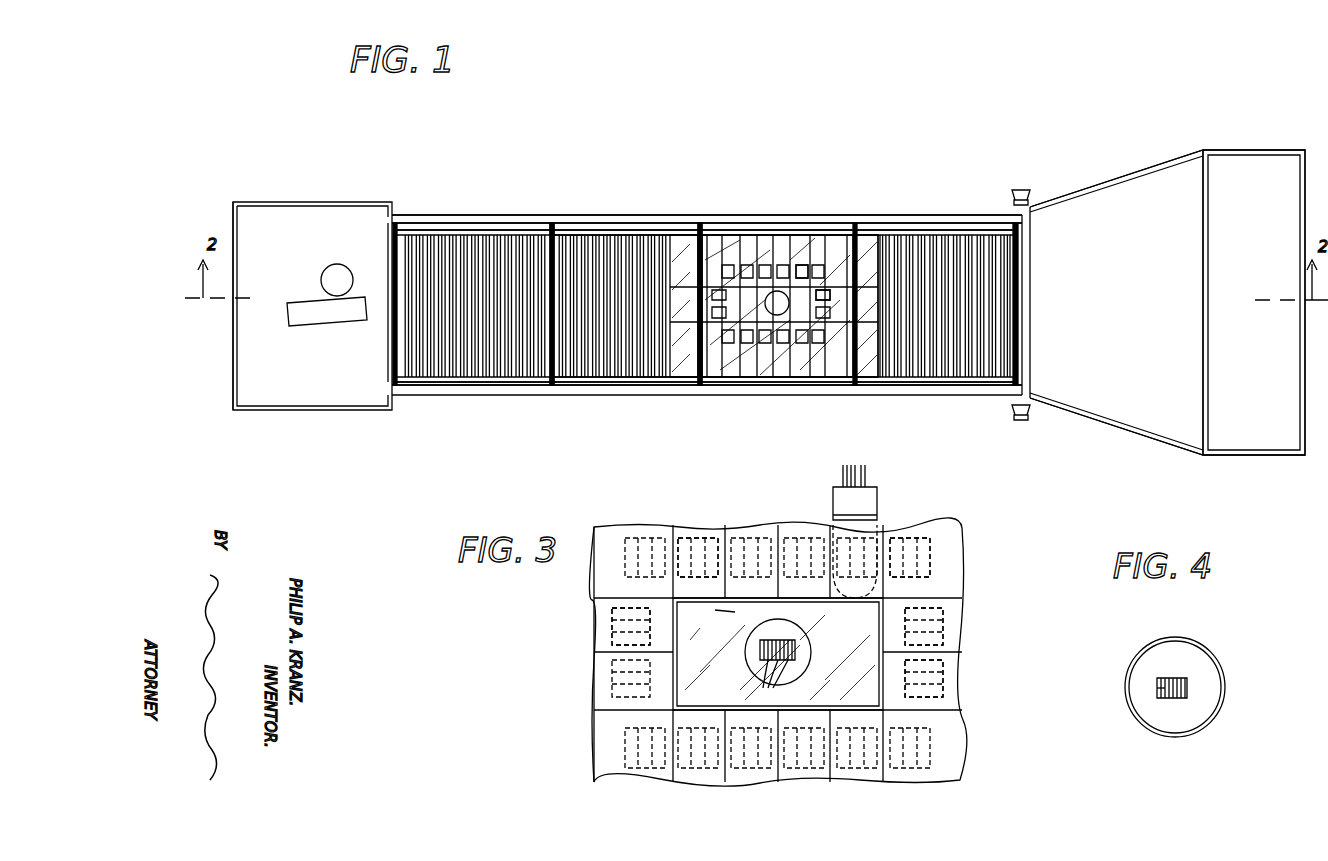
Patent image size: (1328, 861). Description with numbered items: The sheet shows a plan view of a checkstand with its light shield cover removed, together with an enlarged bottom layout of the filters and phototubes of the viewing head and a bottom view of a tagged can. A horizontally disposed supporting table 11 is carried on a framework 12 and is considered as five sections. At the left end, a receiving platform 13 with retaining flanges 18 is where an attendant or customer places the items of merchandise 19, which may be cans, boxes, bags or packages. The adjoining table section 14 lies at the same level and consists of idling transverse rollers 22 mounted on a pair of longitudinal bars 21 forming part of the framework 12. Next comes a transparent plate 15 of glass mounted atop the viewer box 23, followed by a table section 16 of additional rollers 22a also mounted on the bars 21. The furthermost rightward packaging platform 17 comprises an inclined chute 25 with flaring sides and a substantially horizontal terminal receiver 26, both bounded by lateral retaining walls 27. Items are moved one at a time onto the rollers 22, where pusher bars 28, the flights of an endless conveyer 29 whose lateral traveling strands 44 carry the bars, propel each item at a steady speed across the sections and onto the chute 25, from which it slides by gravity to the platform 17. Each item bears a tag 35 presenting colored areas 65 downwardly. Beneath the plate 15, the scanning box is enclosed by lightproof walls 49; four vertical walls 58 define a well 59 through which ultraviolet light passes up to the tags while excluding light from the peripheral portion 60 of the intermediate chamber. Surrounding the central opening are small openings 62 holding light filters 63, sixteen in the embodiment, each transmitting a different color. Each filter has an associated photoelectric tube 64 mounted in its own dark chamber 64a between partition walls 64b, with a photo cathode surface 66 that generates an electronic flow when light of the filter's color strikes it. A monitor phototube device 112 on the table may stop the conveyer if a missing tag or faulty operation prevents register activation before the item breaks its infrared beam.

In FIG. 1, the supporting table 11 is at (467, 178).
In FIG. 1, the framework 12 is at (905, 215).
In FIG. 1, the receiving platform 13 is at (340, 390).
In FIG. 1, the table section 14 is at (582, 405).
In FIG. 1, the transparent plate 15 is at (838, 365).
In FIG. 1, the table section 16 is at (952, 410).
In FIG. 1, the packaging platform 17 is at (1130, 440).
In FIG. 1, the retaining flanges 18 is at (233, 398).
In FIG. 3, the items of merchandise 19 is at (778, 652).
In FIG. 4, the items of merchandise 19 is at (1205, 710).
In FIG. 1, the longitudinal bars 21 is at (955, 228).
In FIG. 1, the idling transverse rollers 22 is at (440, 377).
In FIG. 1, the additional rollers 22a is at (912, 377).
In FIG. 1, the viewer box 23 is at (756, 398).
In FIG. 3, the viewer box 23 is at (985, 659).
In FIG. 1, the inclined chute 25 is at (1130, 331).
In FIG. 1, the terminal receiver 26 is at (1268, 384).
In FIG. 1, the lateral retaining walls 27 is at (1152, 165).
In FIG. 1, the pusher bars 28 is at (552, 228).
In FIG. 1, the conveyer 29 is at (645, 214).
In FIG. 3, the tag 35 is at (798, 652).
In FIG. 4, the tag 35 is at (1180, 678).
In FIG. 1, the lateral traveling strands 44 is at (512, 222).
In FIG. 1, the lightproof walls 49 is at (700, 235).
In FIG. 3, the vertical walls 58 is at (678, 635).
In FIG. 1, the well 59 is at (805, 288).
In FIG. 3, the well 59 is at (728, 687).
In FIG. 3, the peripheral portion 60 is at (714, 528).
In FIG. 1, the openings 62 is at (786, 264).
In FIG. 3, the openings 62 is at (940, 602).
In FIG. 1, the light filters 63 is at (800, 265).
In FIG. 3, the light filters 63 is at (925, 548).
In FIG. 3, the photoelectric tube 64 is at (880, 506).
In FIG. 3, the dark chamber 64a is at (748, 536).
In FIG. 3, the partition walls 64b is at (600, 636).
In FIG. 3, the colored areas 65 is at (764, 688).
In FIG. 4, the colored areas 65 is at (1157, 690).
In FIG. 3, the photo cathode surface 66 is at (908, 540).
In FIG. 1, the monitor phototube device 112 is at (1027, 193).